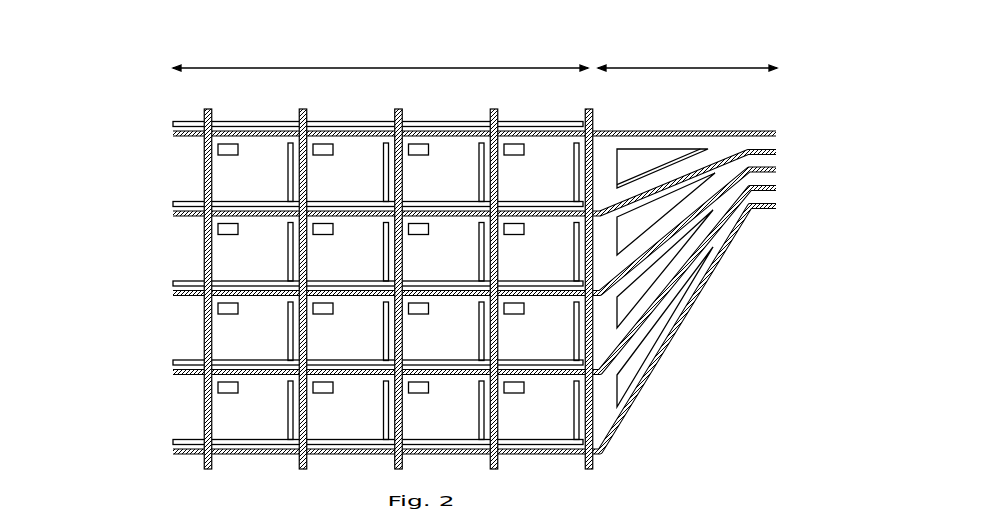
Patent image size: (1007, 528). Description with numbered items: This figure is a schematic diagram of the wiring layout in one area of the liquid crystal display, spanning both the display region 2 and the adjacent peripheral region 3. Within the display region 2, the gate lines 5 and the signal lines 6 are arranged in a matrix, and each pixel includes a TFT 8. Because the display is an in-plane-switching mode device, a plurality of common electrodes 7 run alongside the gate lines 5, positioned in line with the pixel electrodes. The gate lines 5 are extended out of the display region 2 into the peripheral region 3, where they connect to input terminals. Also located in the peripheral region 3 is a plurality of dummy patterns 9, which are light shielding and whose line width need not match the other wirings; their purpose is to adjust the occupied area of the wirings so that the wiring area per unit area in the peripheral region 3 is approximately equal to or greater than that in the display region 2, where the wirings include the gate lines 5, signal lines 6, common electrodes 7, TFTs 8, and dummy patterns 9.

The display region 2 is at (380, 58).
The peripheral region 3 is at (687, 58).
The gate line 5 is at (783, 130).
The signal line 6 is at (208, 109).
The common electrode 7 is at (173, 122).
The TFT 8 is at (222, 155).
The dummy pattern 9 is at (667, 149).